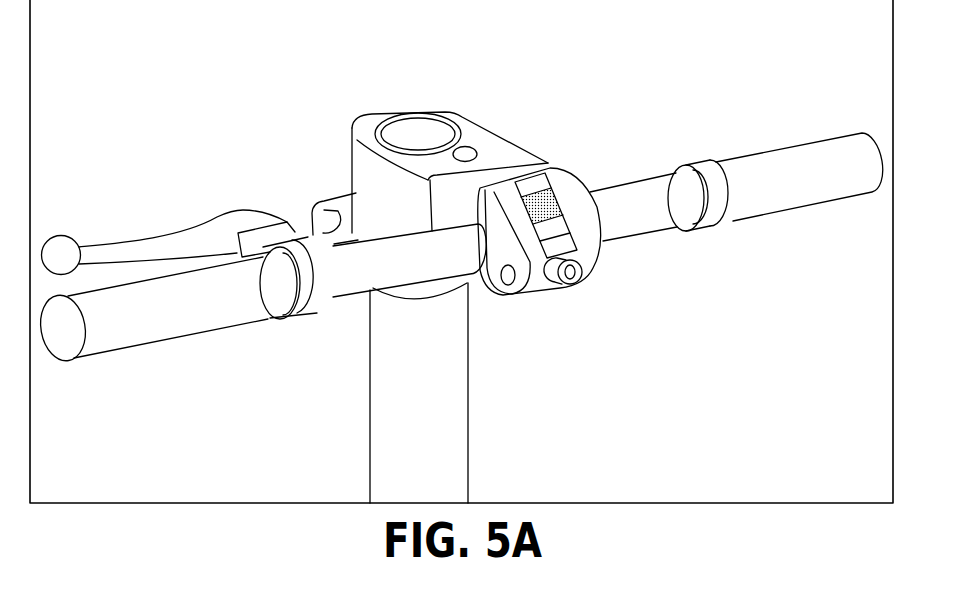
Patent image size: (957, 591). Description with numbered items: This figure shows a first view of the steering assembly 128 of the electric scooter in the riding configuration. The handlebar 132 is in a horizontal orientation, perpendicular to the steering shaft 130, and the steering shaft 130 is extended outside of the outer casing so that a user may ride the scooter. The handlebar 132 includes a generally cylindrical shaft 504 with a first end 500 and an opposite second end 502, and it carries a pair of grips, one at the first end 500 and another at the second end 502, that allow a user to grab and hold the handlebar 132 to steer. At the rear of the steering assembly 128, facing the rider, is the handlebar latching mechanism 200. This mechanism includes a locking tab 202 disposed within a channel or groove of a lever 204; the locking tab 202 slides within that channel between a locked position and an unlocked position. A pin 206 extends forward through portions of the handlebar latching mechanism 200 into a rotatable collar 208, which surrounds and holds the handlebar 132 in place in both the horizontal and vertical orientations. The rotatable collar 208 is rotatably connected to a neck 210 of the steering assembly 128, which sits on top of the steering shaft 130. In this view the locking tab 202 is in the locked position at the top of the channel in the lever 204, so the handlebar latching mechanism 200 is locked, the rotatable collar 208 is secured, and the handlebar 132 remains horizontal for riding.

The steering assembly 128 is at (383, 82).
The steering shaft 130 is at (492, 450).
The handlebar 132 is at (632, 227).
The handlebar latching mechanism 200 is at (573, 243).
The locking tab 202 is at (580, 173).
The lever 204 is at (556, 178).
The pin 206 is at (573, 287).
The rotatable collar 208 is at (445, 208).
The neck 210 is at (477, 138).
The first end 500 is at (178, 322).
The second end 502 is at (798, 190).
The cylindrical shaft 504 is at (655, 220).